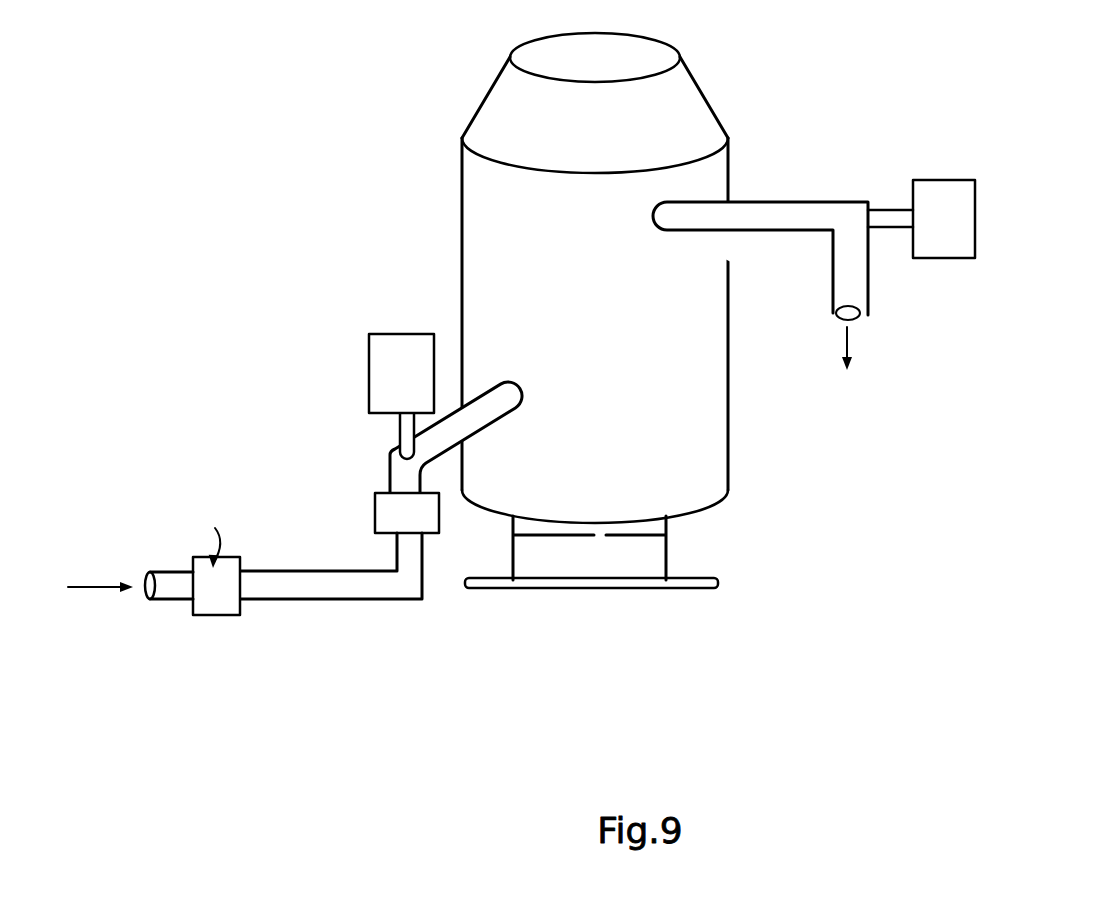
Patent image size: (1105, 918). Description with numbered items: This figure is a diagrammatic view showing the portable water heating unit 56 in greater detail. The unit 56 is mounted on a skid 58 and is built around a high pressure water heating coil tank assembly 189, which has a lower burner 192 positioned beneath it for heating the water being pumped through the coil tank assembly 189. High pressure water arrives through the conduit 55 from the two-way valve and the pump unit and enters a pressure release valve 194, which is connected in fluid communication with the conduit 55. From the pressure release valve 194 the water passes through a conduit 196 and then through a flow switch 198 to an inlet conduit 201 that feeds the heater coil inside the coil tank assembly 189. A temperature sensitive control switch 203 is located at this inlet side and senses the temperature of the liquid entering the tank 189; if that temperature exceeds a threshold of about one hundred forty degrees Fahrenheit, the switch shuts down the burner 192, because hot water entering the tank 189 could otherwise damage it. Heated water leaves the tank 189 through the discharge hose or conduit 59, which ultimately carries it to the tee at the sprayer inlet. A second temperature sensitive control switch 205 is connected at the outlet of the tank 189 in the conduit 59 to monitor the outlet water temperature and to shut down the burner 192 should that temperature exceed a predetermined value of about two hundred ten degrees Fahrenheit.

The high pressure water heating coil tank assembly 189 is at (496, 278).
The inlet conduit 201 is at (447, 417).
The temperature sensitive control switch 203 is at (321, 396).
The flow switch 198 is at (332, 505).
The conduit 196 is at (297, 567).
The pressure release valve 194 is at (220, 601).
The conduit 55 is at (130, 620).
The portable water heating unit 56 is at (245, 629).
The lower burner 192 is at (649, 542).
The skid 58 is at (715, 578).
The discharge hose or conduit 59 is at (857, 283).
The temperature sensitive control switch 205 is at (977, 206).